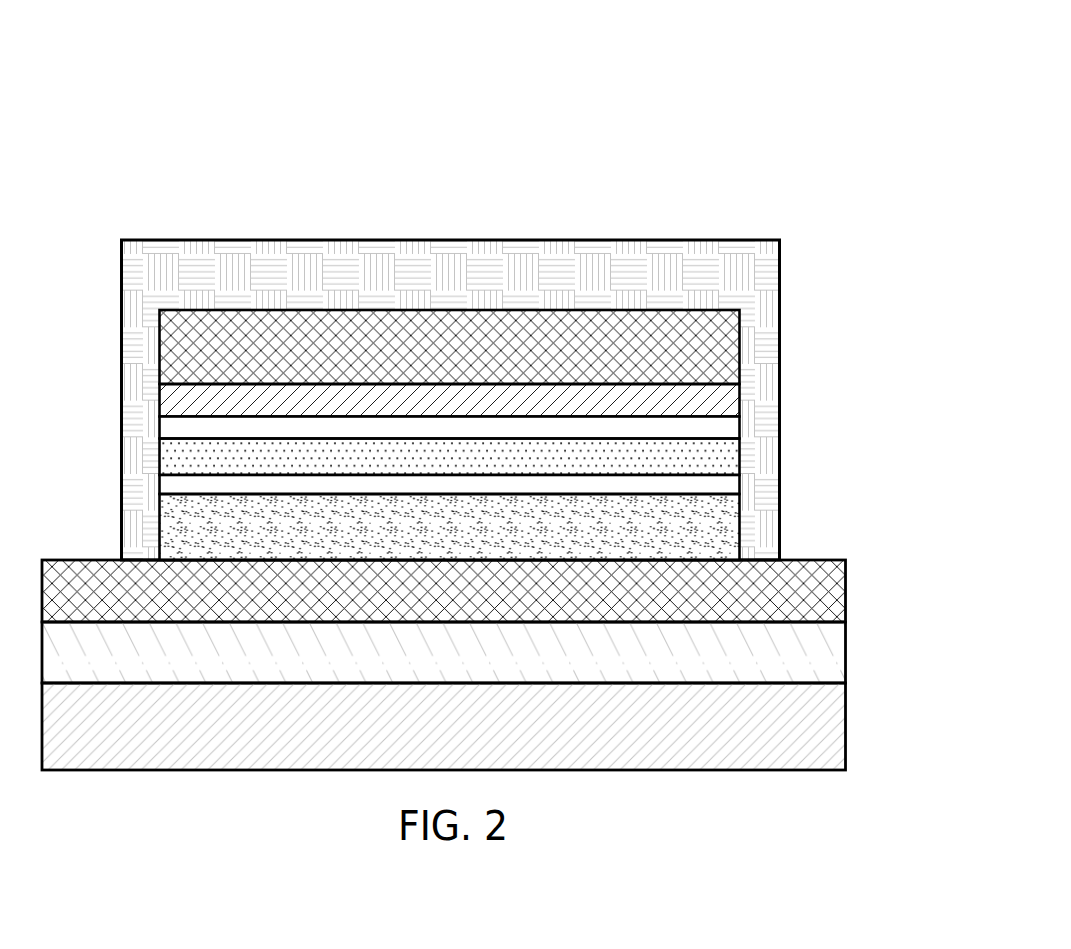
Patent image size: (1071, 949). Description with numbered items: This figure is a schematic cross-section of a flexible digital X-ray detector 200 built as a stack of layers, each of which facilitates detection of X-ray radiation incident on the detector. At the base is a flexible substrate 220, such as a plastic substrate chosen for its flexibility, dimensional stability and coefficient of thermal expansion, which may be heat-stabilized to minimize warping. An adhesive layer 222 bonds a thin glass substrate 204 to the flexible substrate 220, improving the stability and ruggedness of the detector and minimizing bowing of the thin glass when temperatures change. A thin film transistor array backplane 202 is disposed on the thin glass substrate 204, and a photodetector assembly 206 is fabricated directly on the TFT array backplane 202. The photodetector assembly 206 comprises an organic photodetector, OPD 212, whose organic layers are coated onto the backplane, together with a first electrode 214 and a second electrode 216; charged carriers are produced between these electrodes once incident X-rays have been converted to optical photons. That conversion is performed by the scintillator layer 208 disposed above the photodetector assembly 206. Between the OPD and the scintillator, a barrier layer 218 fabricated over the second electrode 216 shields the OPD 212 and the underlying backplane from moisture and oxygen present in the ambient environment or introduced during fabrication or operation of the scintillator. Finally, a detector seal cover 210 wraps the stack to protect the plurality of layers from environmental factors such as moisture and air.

The flexible digital X-ray detector 200 is at (793, 62).
The TFT array backplane 202 is at (728, 533).
The thin glass substrate 204 is at (846, 589).
The photodetector assembly 206 is at (493, 433).
The scintillator layer 208 is at (730, 349).
The detector seal cover 210 is at (780, 263).
The OPD 212 is at (730, 450).
The first electrode 214 is at (728, 480).
The second electrode 216 is at (166, 428).
The barrier layer 218 is at (730, 399).
The flexible substrate 220 is at (846, 726).
The adhesive layer 222 is at (846, 650).